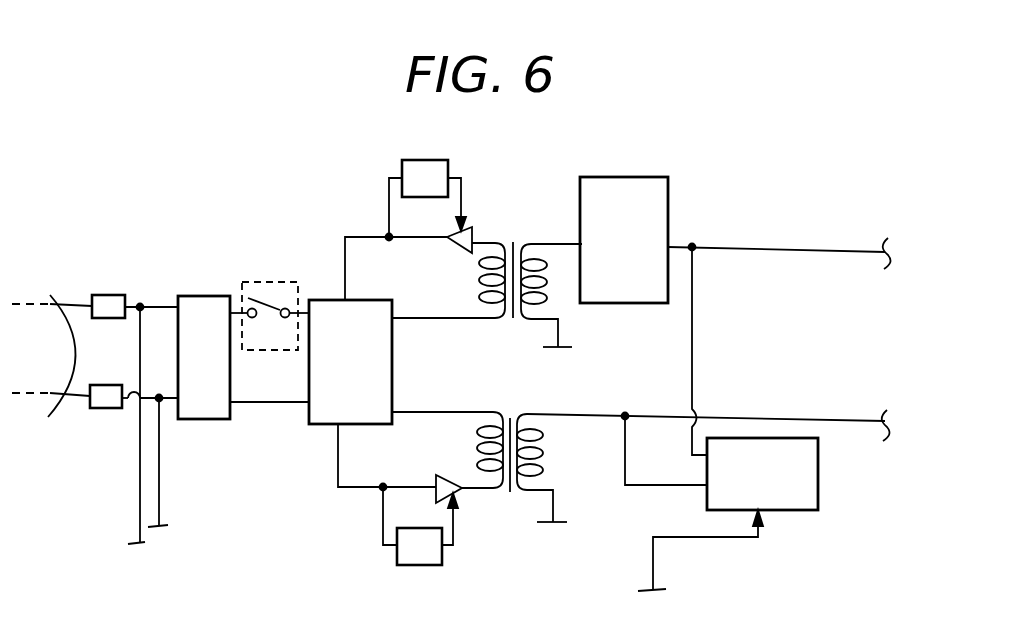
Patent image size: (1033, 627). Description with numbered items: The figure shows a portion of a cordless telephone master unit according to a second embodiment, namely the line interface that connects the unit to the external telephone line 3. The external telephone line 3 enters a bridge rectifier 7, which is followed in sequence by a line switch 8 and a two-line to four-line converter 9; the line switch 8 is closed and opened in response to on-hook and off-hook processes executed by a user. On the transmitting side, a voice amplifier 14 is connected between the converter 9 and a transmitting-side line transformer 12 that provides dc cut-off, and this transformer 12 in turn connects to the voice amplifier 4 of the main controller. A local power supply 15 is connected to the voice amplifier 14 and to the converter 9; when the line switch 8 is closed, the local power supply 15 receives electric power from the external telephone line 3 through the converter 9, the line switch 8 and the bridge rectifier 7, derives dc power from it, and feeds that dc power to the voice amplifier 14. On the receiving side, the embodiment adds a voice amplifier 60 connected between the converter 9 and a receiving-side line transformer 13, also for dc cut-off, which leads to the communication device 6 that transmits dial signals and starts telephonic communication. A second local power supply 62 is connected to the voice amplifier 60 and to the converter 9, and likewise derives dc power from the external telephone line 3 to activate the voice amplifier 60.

The external telephone line 3 is at (50, 295).
The voice amplifier 4 is at (670, 188).
The communication device 6 is at (800, 512).
The bridge rectifier 7 is at (193, 296).
The line switch 8 is at (258, 282).
The 2-line to 4-line converter 9 is at (313, 424).
The transmitting-side line transformer 12 is at (515, 242).
The receiving-side line transformer 13 is at (512, 412).
The voice amplifier 14 is at (447, 239).
The local power supply 15 is at (412, 160).
The voice amplifier 60 is at (437, 478).
The local power supply 62 is at (412, 566).